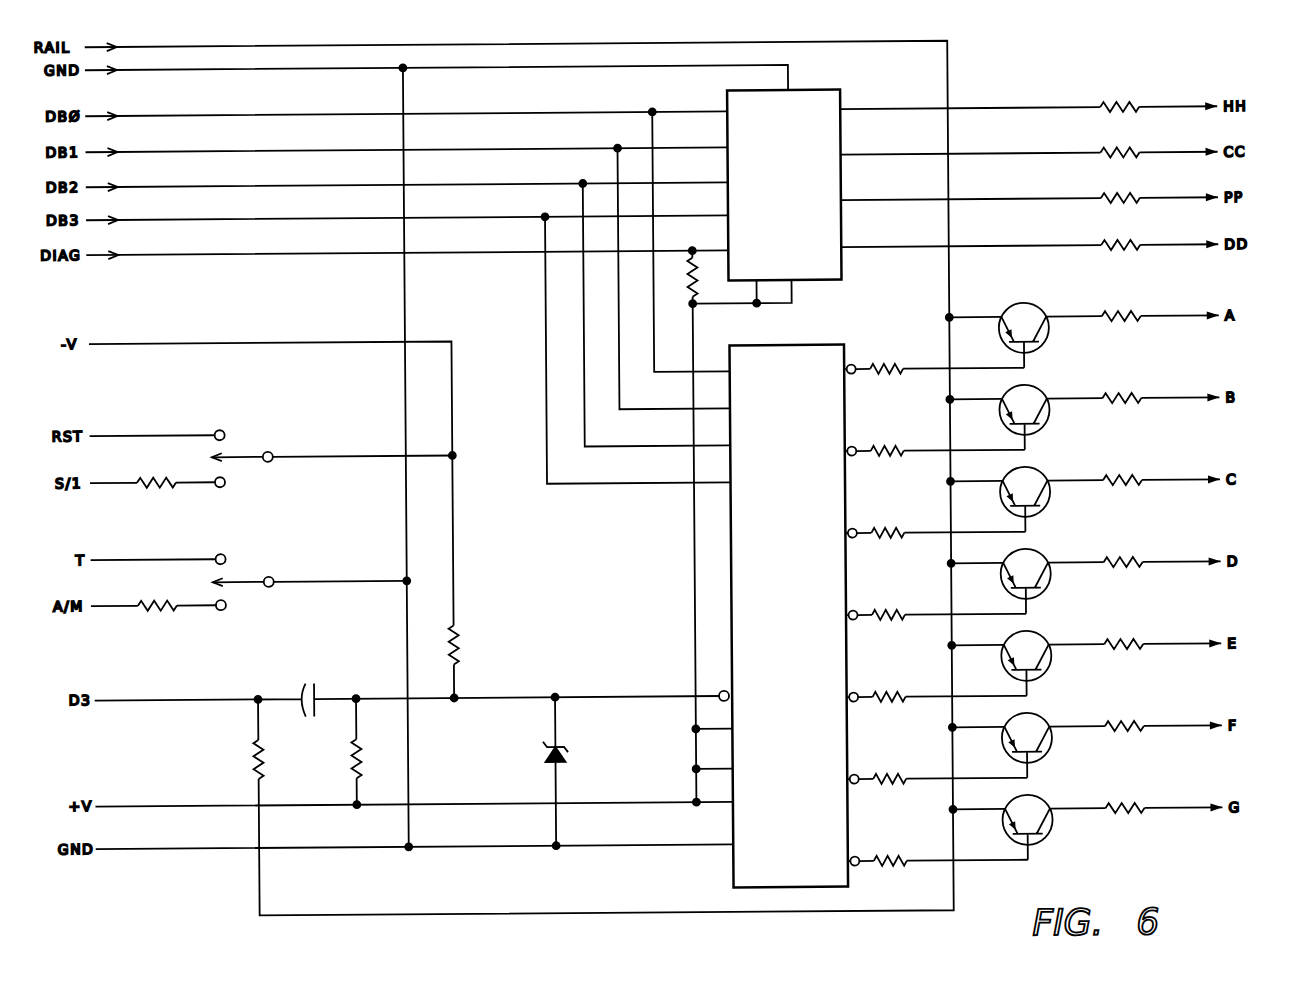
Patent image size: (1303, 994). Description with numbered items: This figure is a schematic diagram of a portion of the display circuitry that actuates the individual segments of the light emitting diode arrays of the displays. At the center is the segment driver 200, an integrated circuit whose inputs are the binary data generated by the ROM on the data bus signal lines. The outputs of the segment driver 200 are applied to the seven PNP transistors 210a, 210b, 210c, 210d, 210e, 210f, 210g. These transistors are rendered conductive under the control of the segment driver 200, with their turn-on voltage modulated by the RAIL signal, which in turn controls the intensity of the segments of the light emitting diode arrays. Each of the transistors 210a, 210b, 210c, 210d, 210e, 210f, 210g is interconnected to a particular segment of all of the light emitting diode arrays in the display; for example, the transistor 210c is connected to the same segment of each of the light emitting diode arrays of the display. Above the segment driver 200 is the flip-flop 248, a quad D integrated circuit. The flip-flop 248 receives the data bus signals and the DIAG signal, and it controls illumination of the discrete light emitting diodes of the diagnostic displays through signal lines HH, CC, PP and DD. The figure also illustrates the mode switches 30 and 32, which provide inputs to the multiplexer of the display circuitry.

The flip-flop 248 is at (789, 116).
The segment driver 200 is at (750, 554).
The transistor 210a is at (1028, 318).
The transistor 210b is at (1028, 400).
The transistor 210c is at (1028, 482).
The transistor 210d is at (1030, 564).
The transistor 210e is at (1030, 646).
The transistor 210f is at (1032, 728).
The transistor 210g is at (1030, 810).
The mode switch 32 is at (252, 446).
The mode switch 30 is at (240, 590).